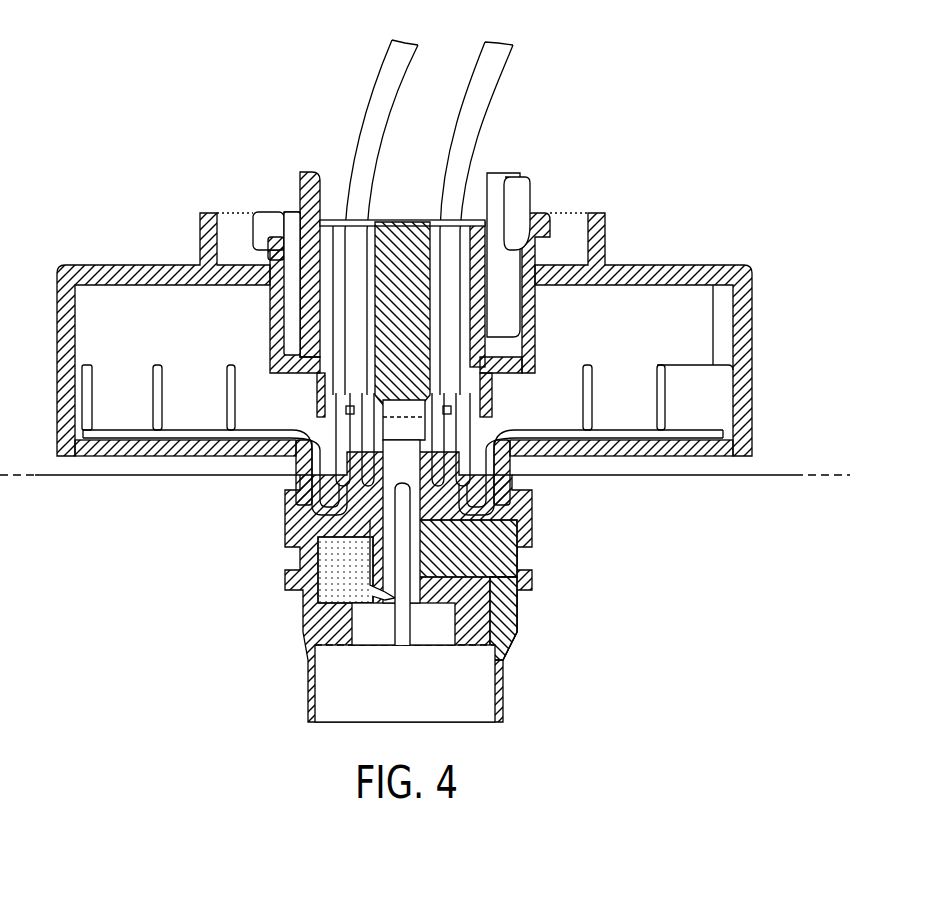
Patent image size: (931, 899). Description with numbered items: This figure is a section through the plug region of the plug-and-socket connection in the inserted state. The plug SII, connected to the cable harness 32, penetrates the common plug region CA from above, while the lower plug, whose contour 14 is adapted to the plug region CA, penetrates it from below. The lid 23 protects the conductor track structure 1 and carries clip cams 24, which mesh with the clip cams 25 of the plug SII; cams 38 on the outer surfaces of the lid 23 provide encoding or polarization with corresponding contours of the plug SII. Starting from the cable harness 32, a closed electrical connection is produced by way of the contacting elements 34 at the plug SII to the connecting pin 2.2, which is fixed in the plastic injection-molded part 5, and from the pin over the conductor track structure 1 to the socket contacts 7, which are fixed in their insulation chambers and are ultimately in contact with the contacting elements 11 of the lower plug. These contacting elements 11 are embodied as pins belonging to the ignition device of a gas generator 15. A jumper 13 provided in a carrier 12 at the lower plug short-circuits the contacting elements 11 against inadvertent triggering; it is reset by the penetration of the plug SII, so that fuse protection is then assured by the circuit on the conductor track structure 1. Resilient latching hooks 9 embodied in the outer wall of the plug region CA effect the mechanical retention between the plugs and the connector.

The lid 23 is at (684, 262).
The clip cams 24 is at (268, 214).
The clip cams 25 is at (276, 246).
The cams 38 is at (295, 313).
The cable harness 32 is at (382, 80).
The plug SII is at (314, 118).
The conductor track structure 1 is at (710, 422).
The gas generator 15 is at (774, 468).
The contacting elements 34 is at (478, 421).
The connecting pin 2.2 is at (492, 484).
The latching hooks 9 is at (300, 515).
The socket contacts 7 is at (420, 533).
The plastic injection-molded part 5 is at (680, 456).
The carrier 12 is at (312, 604).
The contour 14 is at (303, 635).
The jumper 13 is at (372, 598).
The contacting elements 11 is at (412, 612).
The plug region CA is at (258, 377).